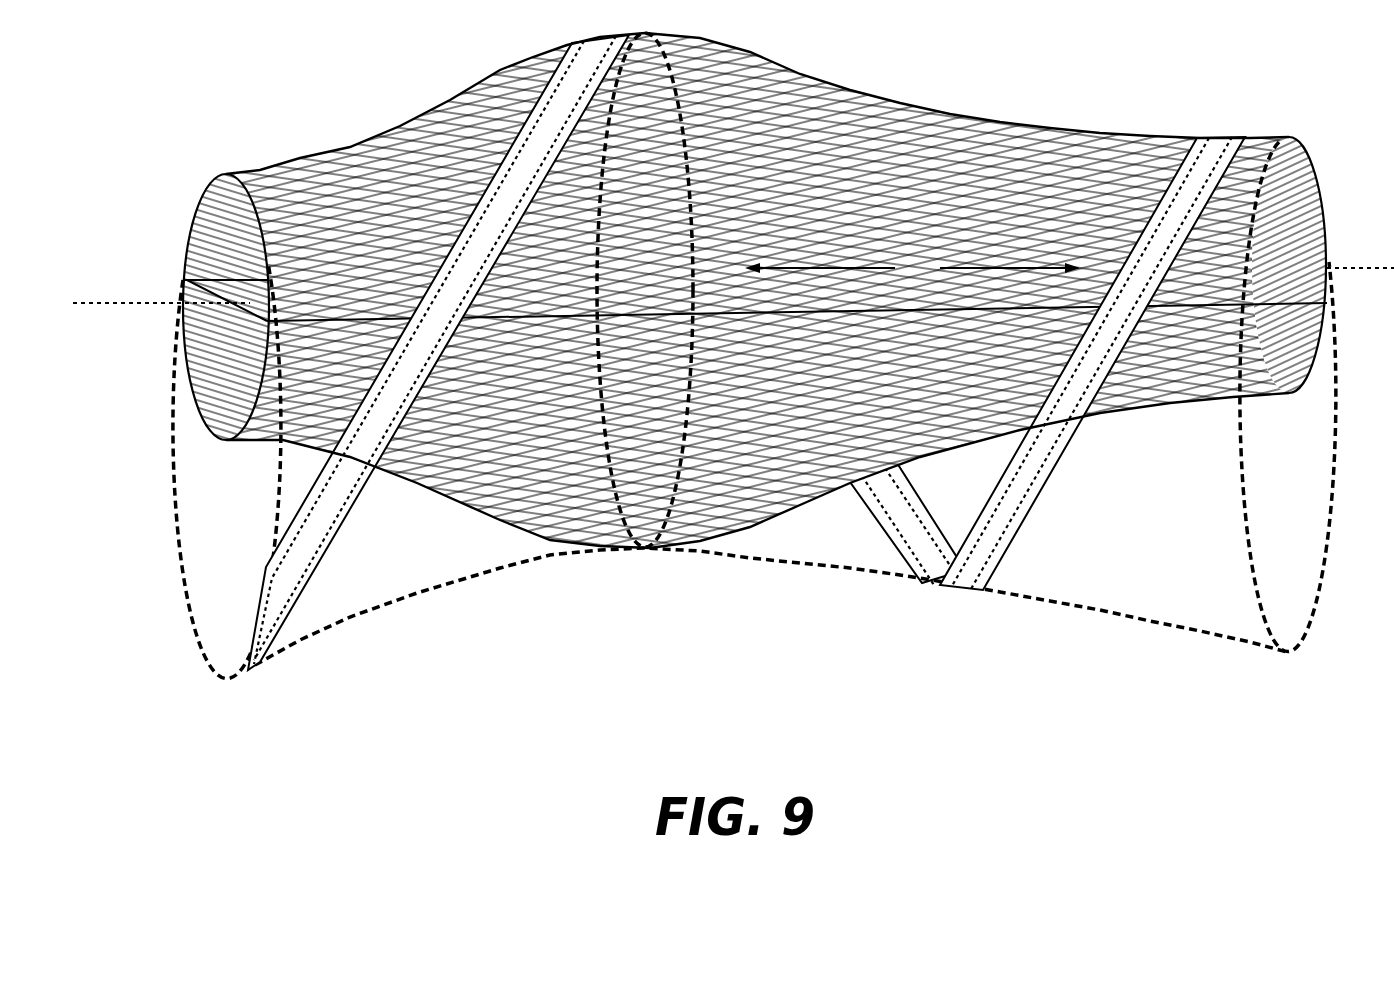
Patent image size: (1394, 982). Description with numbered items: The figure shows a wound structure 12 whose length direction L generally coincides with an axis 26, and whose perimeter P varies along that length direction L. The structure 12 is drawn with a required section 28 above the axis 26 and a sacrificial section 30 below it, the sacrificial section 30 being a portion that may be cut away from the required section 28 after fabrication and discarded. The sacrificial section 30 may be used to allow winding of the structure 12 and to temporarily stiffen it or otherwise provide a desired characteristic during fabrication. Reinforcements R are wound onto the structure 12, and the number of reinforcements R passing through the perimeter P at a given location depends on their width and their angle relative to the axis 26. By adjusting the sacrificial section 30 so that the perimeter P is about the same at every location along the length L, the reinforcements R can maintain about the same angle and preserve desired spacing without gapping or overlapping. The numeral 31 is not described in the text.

The structure 12 is at (146, 542).
The axis 26 is at (117, 302).
The required section 28 is at (808, 184).
The sacrificial section 30 is at (807, 368).
The end portion 31 is at (183, 277).
The length direction L is at (923, 278).
The perimeter P is at (240, 638).
The reinforcements R is at (1003, 537).